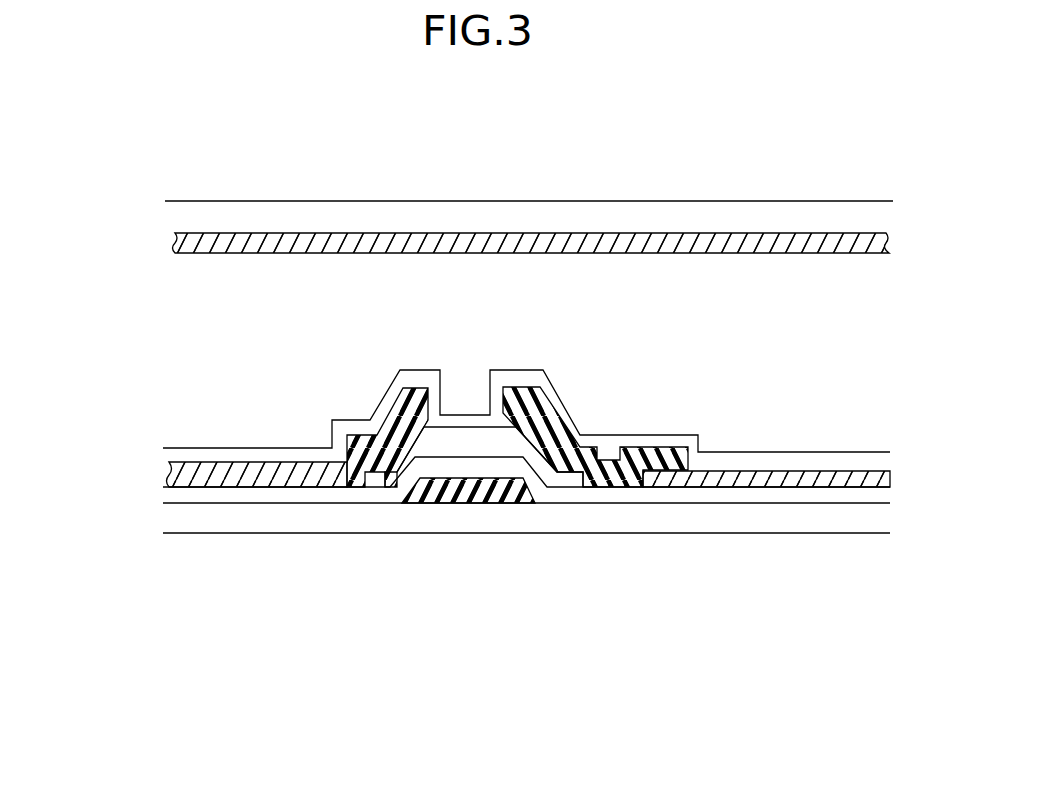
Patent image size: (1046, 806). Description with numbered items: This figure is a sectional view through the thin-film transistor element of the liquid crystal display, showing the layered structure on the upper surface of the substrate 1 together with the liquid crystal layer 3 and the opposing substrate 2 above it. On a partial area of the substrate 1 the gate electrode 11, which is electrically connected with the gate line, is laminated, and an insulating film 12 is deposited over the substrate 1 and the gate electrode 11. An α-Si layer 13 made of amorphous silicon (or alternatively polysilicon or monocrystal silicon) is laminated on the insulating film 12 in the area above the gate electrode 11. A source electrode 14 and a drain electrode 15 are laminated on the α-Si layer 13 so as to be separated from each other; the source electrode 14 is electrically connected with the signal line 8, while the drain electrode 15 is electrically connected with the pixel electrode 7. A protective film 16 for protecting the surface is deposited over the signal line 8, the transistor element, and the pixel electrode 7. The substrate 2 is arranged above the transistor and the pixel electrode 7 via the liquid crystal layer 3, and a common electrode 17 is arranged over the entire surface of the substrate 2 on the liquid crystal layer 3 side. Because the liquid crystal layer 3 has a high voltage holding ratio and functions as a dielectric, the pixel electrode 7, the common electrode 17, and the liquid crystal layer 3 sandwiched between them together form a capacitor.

The substrate 1 is at (287, 523).
The substrate 2 is at (487, 222).
The liquid crystal layer 3 is at (298, 272).
The pixel electrode 7 is at (852, 478).
The signal line 8 is at (193, 477).
The gate electrode 11 is at (445, 497).
The insulating film 12 is at (745, 495).
The α-Si layer 13 is at (565, 480).
The source electrode 14 is at (378, 462).
The drain electrode 15 is at (665, 472).
The protective film 16 is at (222, 455).
The common electrode 17 is at (648, 236).